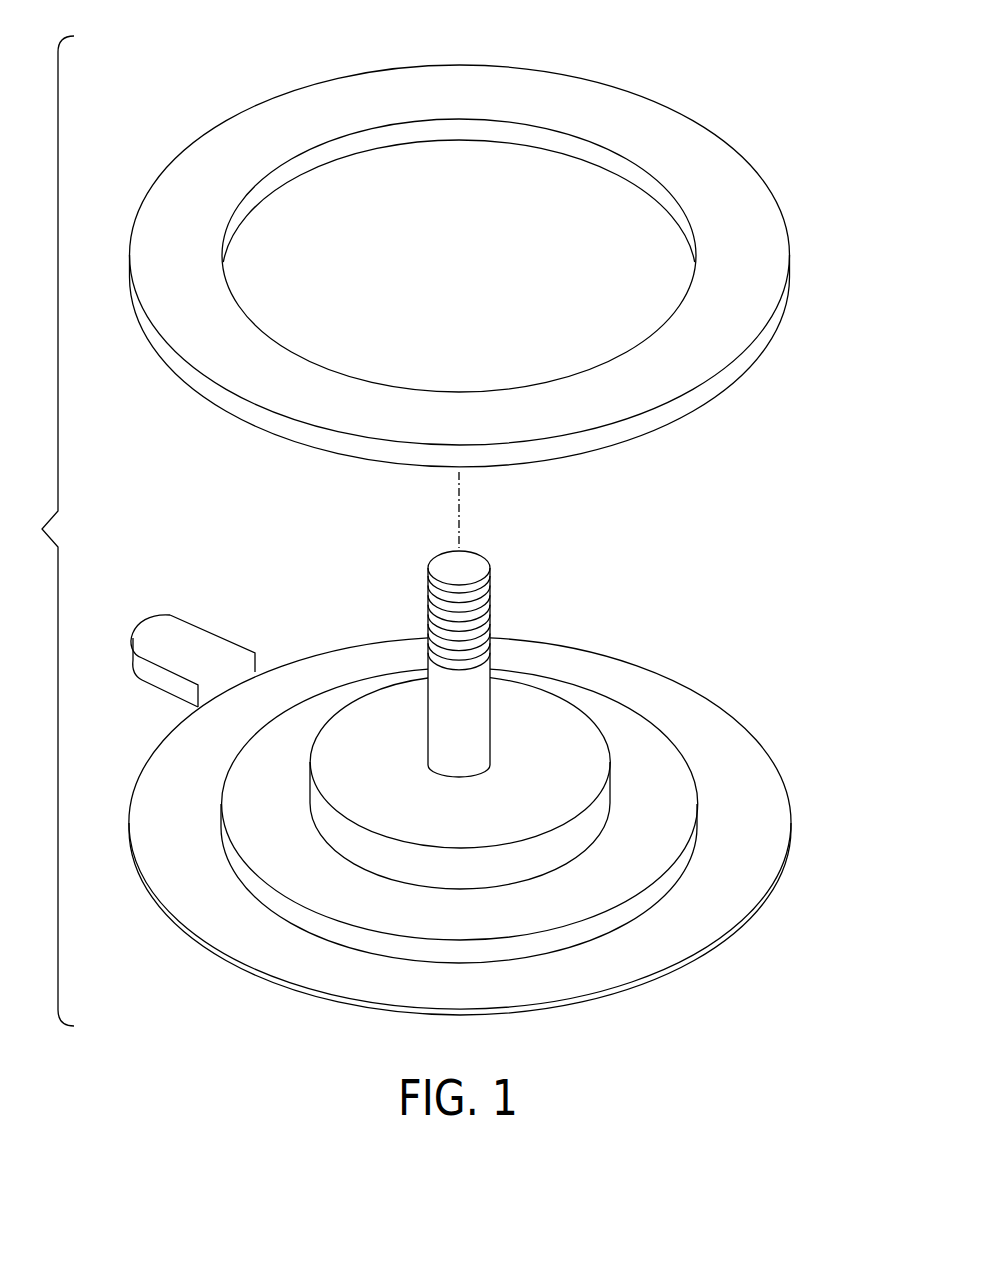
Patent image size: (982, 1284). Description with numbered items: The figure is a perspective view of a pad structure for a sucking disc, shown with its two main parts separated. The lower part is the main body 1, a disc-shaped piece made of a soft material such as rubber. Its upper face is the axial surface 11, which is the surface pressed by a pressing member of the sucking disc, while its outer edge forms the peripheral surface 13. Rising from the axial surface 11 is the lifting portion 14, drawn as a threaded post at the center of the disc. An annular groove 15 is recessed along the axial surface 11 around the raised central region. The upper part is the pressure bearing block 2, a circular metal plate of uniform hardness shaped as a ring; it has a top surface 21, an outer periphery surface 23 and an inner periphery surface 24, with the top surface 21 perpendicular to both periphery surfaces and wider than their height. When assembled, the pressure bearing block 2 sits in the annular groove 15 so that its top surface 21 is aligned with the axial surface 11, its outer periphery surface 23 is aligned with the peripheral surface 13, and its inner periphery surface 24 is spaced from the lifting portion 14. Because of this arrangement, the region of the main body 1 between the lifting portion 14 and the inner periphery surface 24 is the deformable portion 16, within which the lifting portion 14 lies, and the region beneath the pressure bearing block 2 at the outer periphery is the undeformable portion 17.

The main body 1 is at (460, 783).
The axial surface 11 is at (620, 718).
The peripheral surface 13 is at (694, 966).
The lifting portion 14 is at (485, 607).
The annular groove 15 is at (176, 834).
The deformable portion 16 is at (677, 786).
The undeformable portion 17 is at (754, 887).
The pressure bearing block 2 is at (432, 238).
The top surface 21 is at (392, 81).
The outer periphery surface 23 is at (742, 357).
The inner periphery surface 24 is at (502, 134).